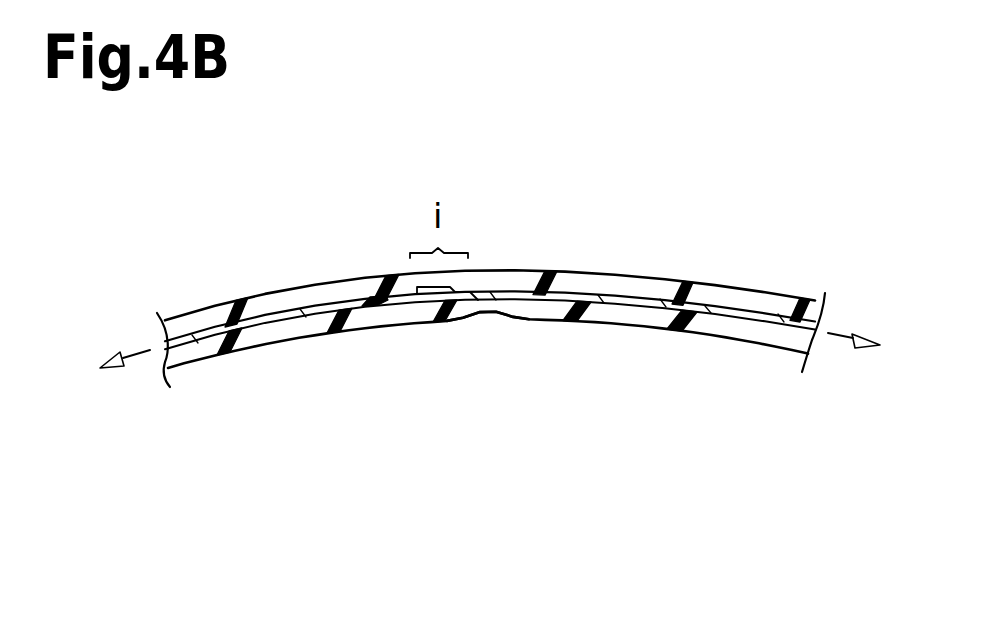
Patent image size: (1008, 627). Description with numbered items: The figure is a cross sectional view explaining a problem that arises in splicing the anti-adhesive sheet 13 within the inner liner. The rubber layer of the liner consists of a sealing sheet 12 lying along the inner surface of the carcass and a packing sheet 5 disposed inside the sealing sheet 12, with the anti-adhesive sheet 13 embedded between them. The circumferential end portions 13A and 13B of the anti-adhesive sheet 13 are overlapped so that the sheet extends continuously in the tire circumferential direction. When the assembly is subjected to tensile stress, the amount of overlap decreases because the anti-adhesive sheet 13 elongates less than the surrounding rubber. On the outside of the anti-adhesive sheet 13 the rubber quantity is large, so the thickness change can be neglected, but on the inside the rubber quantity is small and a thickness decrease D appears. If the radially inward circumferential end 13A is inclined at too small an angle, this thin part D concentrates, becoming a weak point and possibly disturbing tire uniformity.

The packing sheet 5 is at (747, 333).
The sealing sheet 12 is at (760, 300).
The anti-adhesive sheet 13 is at (632, 303).
The radially inward circumferential end portion 13A is at (428, 302).
The circumferential end portion 13B is at (380, 278).
The thickness decrease D is at (490, 322).